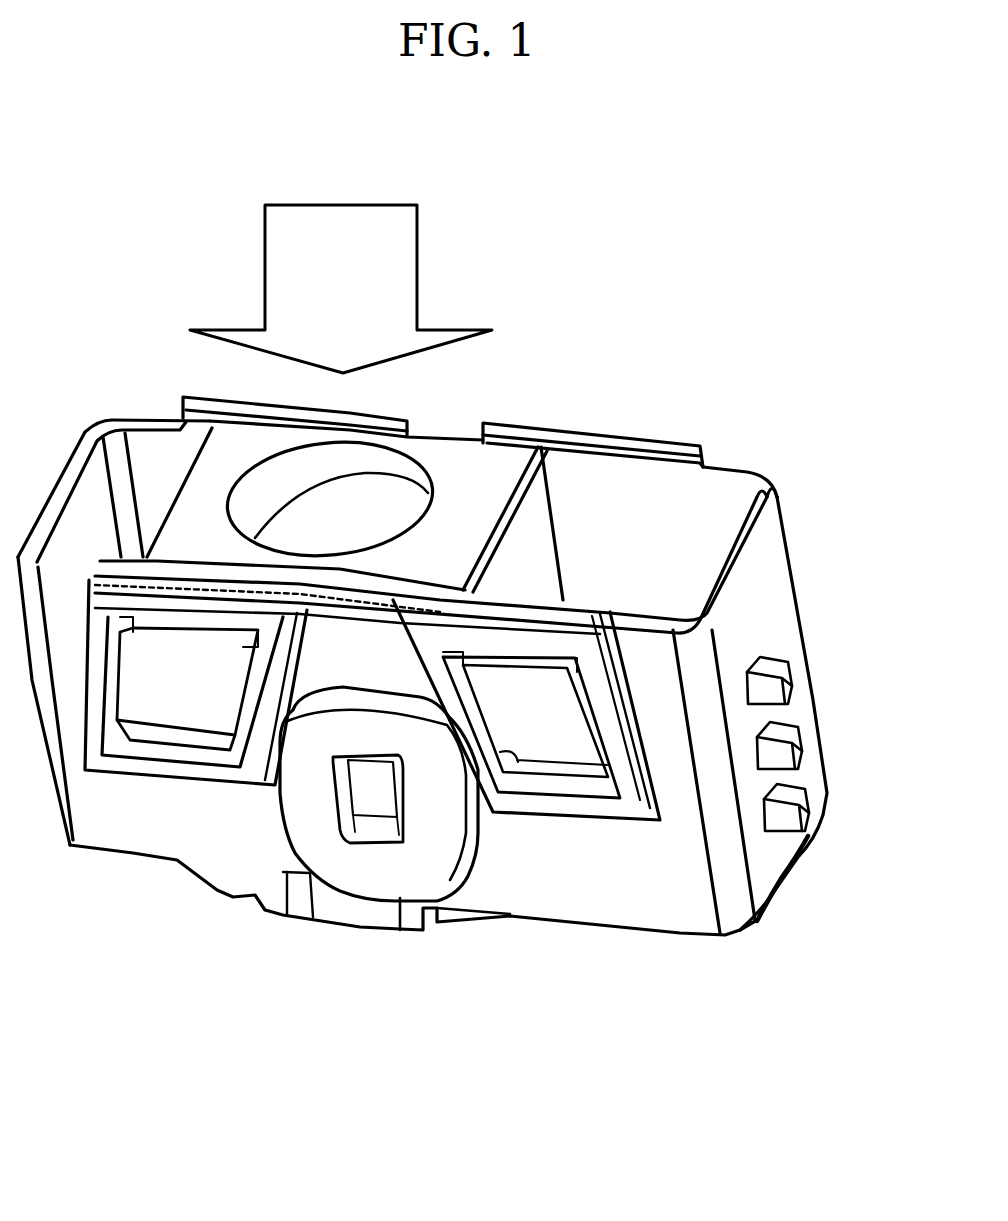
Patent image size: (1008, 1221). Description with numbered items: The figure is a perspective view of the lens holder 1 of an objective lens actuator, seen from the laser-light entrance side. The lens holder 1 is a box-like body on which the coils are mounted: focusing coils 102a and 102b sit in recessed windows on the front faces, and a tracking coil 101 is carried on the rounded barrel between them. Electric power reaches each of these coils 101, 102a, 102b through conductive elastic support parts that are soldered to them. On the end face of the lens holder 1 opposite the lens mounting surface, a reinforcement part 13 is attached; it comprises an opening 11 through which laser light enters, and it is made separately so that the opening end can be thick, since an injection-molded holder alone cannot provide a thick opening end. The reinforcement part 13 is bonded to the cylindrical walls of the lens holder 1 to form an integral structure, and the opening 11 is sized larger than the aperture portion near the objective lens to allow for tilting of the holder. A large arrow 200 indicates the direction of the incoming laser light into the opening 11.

The lens holder 1 is at (763, 583).
The opening 11 is at (378, 508).
The reinforcement part 13 is at (500, 480).
The tracking coil 101 is at (382, 883).
The focusing coil 102a is at (625, 807).
The focusing coil 102b is at (177, 770).
The insertion direction arrow 200 is at (341, 289).